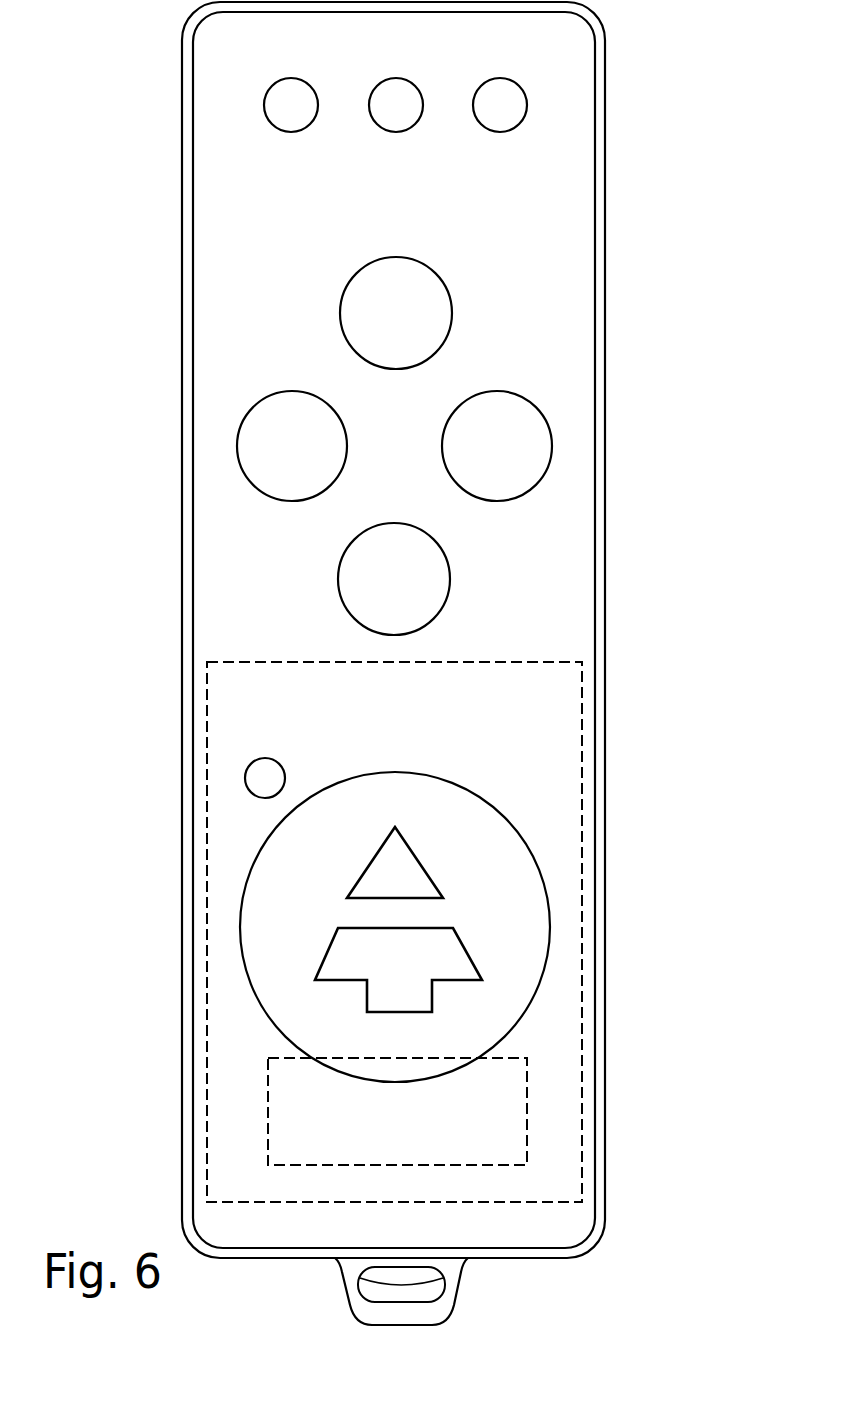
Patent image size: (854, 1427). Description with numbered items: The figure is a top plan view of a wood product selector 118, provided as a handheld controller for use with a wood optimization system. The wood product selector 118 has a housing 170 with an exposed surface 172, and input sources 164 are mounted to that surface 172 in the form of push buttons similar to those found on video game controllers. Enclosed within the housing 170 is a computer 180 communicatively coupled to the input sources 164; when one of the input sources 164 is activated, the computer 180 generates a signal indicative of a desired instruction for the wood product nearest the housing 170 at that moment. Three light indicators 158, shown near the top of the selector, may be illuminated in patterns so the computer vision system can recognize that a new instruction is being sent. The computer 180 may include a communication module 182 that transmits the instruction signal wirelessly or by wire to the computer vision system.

The wood product selector 118 is at (656, 89).
The light indicators 158 is at (395, 102).
The input sources 164 is at (400, 270).
The housing 170 is at (605, 332).
The exposed surface 172 is at (232, 198).
The computer 180 is at (582, 807).
The communication module 182 is at (527, 1103).